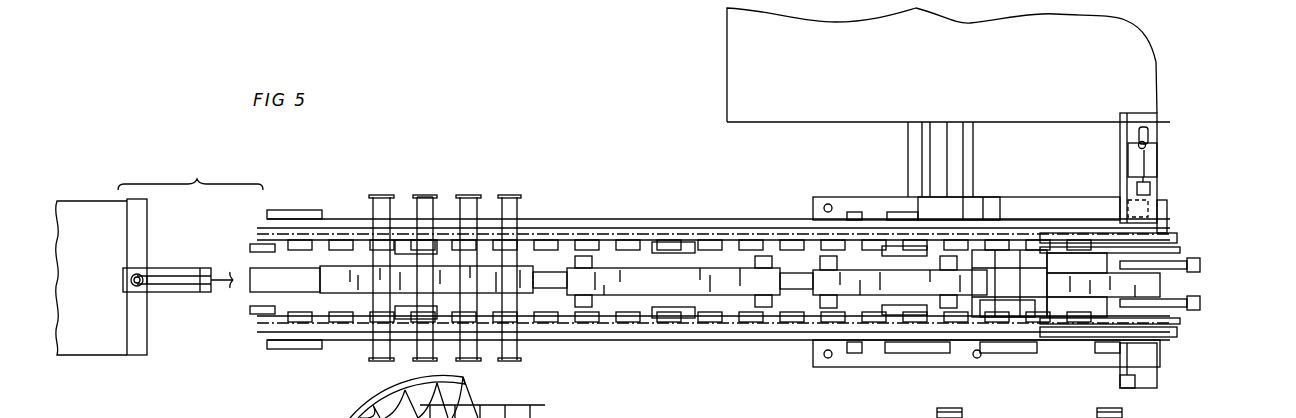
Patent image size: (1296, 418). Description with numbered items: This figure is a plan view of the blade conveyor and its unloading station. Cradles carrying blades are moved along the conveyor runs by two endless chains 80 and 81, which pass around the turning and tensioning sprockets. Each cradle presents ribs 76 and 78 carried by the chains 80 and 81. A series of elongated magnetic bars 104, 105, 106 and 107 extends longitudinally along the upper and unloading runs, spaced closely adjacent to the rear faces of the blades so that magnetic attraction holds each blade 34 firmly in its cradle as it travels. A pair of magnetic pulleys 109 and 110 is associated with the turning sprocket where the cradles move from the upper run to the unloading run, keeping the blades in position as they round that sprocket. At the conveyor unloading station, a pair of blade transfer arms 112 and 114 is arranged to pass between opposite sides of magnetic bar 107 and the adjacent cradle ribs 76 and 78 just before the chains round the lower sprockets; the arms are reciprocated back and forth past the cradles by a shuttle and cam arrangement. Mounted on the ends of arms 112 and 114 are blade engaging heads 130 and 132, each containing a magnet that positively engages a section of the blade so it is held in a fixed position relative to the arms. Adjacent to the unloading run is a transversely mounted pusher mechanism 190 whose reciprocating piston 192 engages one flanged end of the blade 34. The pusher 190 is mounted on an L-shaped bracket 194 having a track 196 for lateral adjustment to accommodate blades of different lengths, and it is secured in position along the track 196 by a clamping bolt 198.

The blade 34 is at (438, 215).
The cradle rib 76 is at (1178, 328).
The cradle rib 78 is at (1172, 240).
The endless chain 80 is at (536, 236).
The endless chain 81 is at (598, 325).
The magnetic bar 104 is at (337, 275).
The magnetic bar 105 is at (640, 285).
The magnetic bar 106 is at (845, 278).
The magnetic bar 107 is at (1165, 282).
The magnetic pulley 109 is at (1007, 310).
The magnetic pulley 110 is at (1013, 257).
The blade transfer arm 112 is at (1175, 320).
The blade transfer arm 114 is at (1178, 252).
The blade engaging head 130 is at (1203, 304).
The blade engaging head 132 is at (1203, 265).
The pusher mechanism 190 is at (1148, 170).
The reciprocating piston 192 is at (1151, 189).
The L-shaped bracket 194 is at (1150, 128).
The track 196 is at (1146, 125).
The clamping bolt 198 is at (1146, 146).